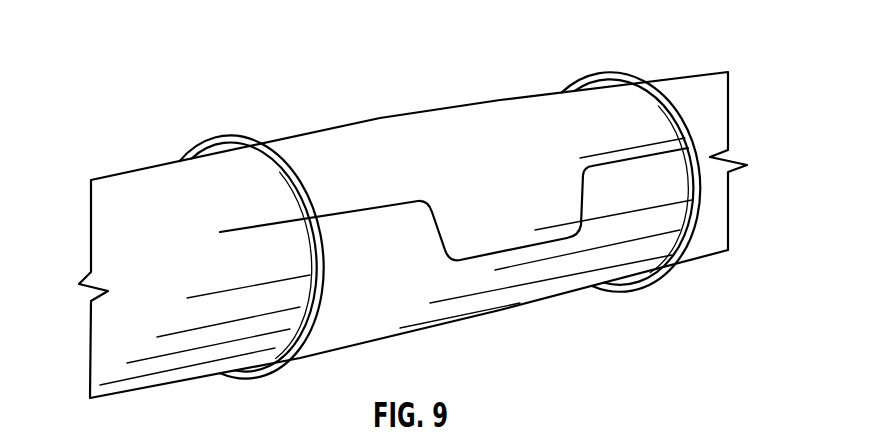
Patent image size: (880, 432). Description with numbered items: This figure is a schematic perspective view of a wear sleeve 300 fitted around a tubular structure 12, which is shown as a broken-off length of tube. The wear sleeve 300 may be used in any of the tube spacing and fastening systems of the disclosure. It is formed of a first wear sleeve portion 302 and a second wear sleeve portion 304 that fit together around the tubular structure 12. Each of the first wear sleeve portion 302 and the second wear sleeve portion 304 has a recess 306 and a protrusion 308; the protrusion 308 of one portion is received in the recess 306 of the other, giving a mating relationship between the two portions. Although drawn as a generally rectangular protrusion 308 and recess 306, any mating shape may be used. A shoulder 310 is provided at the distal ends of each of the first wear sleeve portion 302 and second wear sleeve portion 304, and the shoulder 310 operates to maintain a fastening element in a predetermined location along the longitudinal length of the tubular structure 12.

The tubular structure 12 is at (699, 88).
The wear sleeve 300 is at (413, 220).
The first wear sleeve portion 302 is at (325, 145).
The second wear sleeve portion 304 is at (417, 308).
The recess 306 is at (530, 250).
The protrusion 308 is at (463, 217).
The shoulder 310 is at (196, 148).